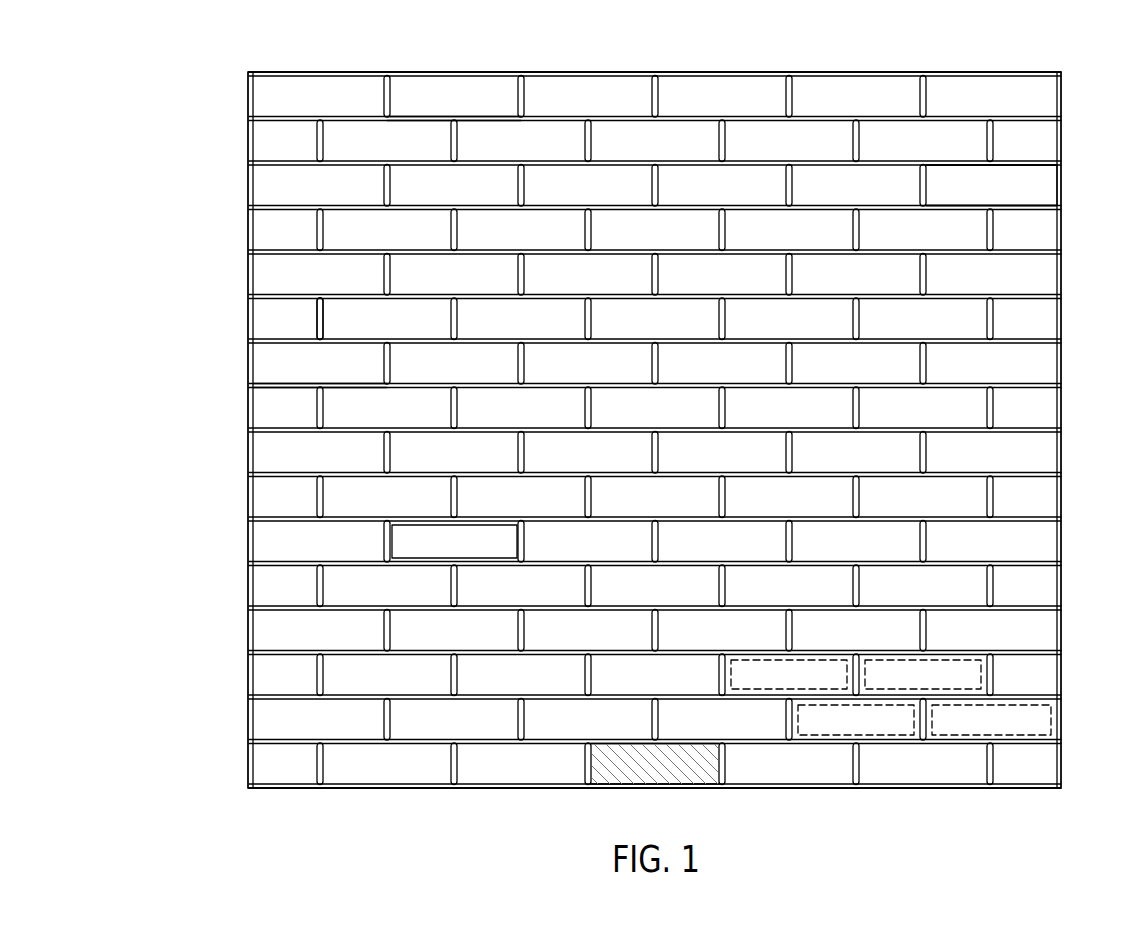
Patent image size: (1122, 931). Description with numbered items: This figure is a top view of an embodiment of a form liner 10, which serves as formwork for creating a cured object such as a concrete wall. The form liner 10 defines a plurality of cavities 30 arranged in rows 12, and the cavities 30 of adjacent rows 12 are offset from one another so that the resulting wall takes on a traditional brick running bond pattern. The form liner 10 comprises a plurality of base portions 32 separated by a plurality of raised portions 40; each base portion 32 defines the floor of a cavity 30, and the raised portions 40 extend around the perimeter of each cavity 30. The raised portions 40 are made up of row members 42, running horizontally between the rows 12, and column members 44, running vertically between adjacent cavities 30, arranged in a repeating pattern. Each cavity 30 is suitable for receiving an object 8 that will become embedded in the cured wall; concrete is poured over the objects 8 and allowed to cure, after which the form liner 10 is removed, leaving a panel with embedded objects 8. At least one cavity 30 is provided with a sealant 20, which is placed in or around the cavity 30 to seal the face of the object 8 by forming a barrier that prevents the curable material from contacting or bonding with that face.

The form liner 10 is at (1047, 55).
The rows 12 is at (232, 181).
The object 8 is at (398, 542).
The sealant 20 is at (1051, 718).
The cavity 30 is at (1052, 191).
The base portion 32 is at (1046, 183).
The raised portion 40 is at (487, 118).
The row member 42 is at (266, 385).
The column member 44 is at (318, 324).